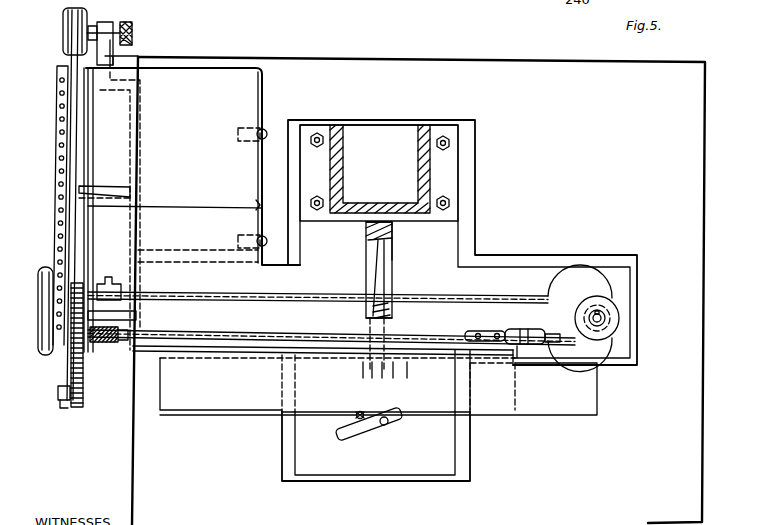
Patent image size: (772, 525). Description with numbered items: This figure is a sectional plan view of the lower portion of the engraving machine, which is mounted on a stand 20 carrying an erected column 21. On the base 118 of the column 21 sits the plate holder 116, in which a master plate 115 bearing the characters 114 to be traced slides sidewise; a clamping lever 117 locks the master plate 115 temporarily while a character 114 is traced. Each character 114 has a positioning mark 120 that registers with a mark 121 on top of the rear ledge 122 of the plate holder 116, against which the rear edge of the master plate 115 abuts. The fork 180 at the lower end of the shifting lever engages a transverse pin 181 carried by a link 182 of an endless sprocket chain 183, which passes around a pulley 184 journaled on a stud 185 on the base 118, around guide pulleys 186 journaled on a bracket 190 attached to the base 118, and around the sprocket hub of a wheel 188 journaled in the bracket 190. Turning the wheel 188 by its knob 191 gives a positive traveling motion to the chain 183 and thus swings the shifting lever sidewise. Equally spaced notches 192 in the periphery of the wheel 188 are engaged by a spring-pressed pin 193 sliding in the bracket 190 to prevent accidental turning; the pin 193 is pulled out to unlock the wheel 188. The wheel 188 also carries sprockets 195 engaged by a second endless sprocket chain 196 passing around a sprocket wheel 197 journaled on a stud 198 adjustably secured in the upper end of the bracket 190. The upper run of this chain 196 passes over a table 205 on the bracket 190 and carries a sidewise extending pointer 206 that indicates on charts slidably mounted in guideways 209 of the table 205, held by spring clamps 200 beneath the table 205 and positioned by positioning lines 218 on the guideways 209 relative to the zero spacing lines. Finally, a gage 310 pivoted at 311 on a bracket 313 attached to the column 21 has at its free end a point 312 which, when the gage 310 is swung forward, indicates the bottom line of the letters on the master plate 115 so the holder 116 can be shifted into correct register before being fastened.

The stand 20 is at (418, 291).
The column 21 is at (385, 242).
The characters 114 is at (344, 388).
The master plate 115 is at (192, 414).
The plate holder 116 is at (376, 415).
The clamping lever 117 is at (371, 430).
The base 118 is at (286, 462).
The positioning mark 120 is at (348, 370).
The mark 121 is at (370, 355).
The rear ledge 122 is at (430, 362).
The fork 180 is at (524, 333).
The transverse pin 181 is at (536, 332).
The link 182 is at (548, 348).
The endless sprocket chain 183 is at (495, 292).
The pulley 184 is at (612, 295).
The stud 185 is at (606, 318).
The guide pulleys 186 is at (121, 277).
The wheel 188 is at (60, 392).
The bracket 190 is at (114, 58).
The knob 191 is at (40, 325).
The notches 192 is at (84, 403).
The spring-pressed pin 193 is at (88, 184).
The sprockets 195 is at (63, 405).
The endless sprocket chain 196 is at (70, 214).
The sprocket wheel 197 is at (64, 34).
The stud 198 is at (93, 23).
The spring clamps 200 is at (262, 188).
The table 205 is at (192, 210).
The pointer 206 is at (214, 200).
The guideways 209 is at (262, 110).
The positioning lines 218 is at (271, 202).
The gage 310 is at (380, 281).
The pivot 311 is at (392, 315).
The point 312 is at (372, 243).
The bracket 313 is at (392, 250).